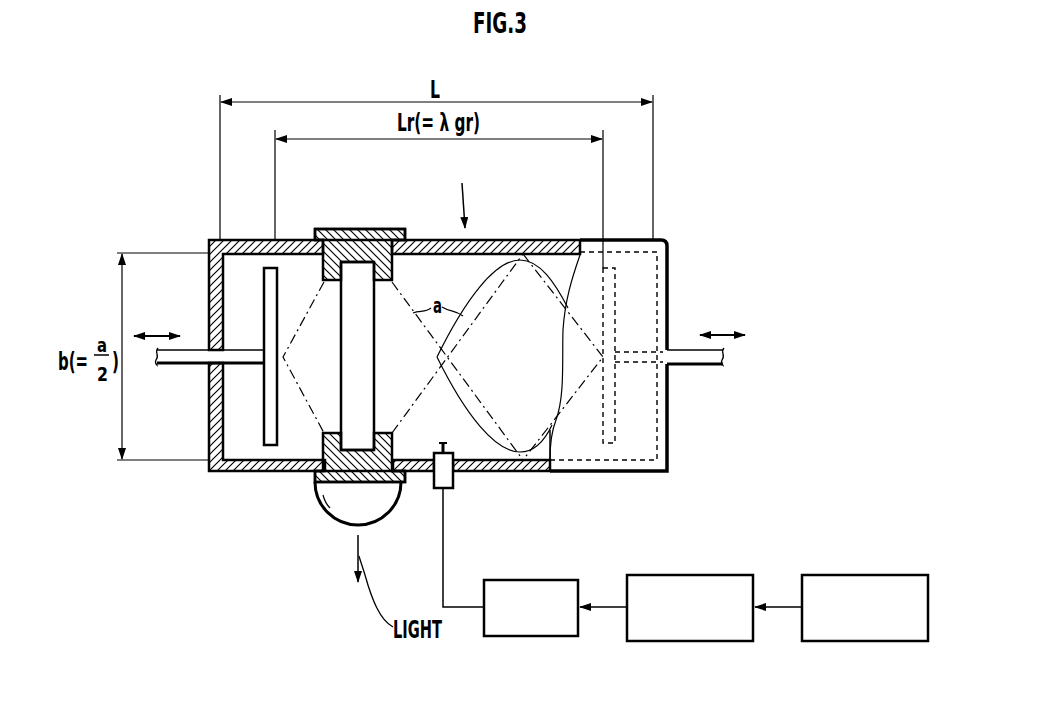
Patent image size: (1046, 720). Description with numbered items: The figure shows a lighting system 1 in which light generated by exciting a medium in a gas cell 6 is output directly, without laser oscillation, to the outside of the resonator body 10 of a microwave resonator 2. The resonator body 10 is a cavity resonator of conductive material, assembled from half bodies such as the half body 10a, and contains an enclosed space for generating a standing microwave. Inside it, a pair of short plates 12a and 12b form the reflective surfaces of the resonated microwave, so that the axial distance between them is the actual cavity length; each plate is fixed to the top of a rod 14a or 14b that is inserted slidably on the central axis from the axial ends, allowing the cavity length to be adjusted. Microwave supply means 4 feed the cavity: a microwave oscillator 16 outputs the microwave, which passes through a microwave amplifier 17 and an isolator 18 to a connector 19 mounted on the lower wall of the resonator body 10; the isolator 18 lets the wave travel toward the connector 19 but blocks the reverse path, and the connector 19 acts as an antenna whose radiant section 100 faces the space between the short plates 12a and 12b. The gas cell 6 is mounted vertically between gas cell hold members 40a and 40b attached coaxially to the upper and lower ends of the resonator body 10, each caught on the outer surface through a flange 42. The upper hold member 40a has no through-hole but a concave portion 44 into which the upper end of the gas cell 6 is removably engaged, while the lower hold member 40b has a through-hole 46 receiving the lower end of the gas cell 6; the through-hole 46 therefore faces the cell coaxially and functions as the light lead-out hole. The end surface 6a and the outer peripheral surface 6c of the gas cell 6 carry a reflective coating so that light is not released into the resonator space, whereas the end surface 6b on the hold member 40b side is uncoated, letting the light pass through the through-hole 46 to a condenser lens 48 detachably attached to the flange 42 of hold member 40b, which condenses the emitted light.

The lighting system 1 is at (691, 203).
The microwave resonator 2 is at (463, 190).
The microwave supply means 4 is at (669, 645).
The gas cell 6 is at (349, 391).
The end surface 6a is at (366, 229).
The end surface 6b is at (366, 448).
The outer peripheral surface 6c is at (342, 347).
The resonator body 10 is at (438, 333).
The half body 10a is at (520, 240).
The short plate 12a is at (263, 283).
The short plate 12b is at (615, 337).
The rod 14a is at (185, 366).
The rod 14b is at (698, 364).
The microwave oscillator 16 is at (877, 575).
The microwave amplifier 17 is at (724, 575).
The isolator 18 is at (557, 580).
The connector 19 is at (453, 480).
The gas cell hold member 40a is at (393, 265).
The gas cell hold member 40b is at (396, 446).
The flange 42 is at (315, 233).
The concave portion 44 is at (368, 273).
The through-hole 46 is at (370, 437).
The condenser lens 48 is at (337, 510).
The radiant section 100 is at (445, 447).